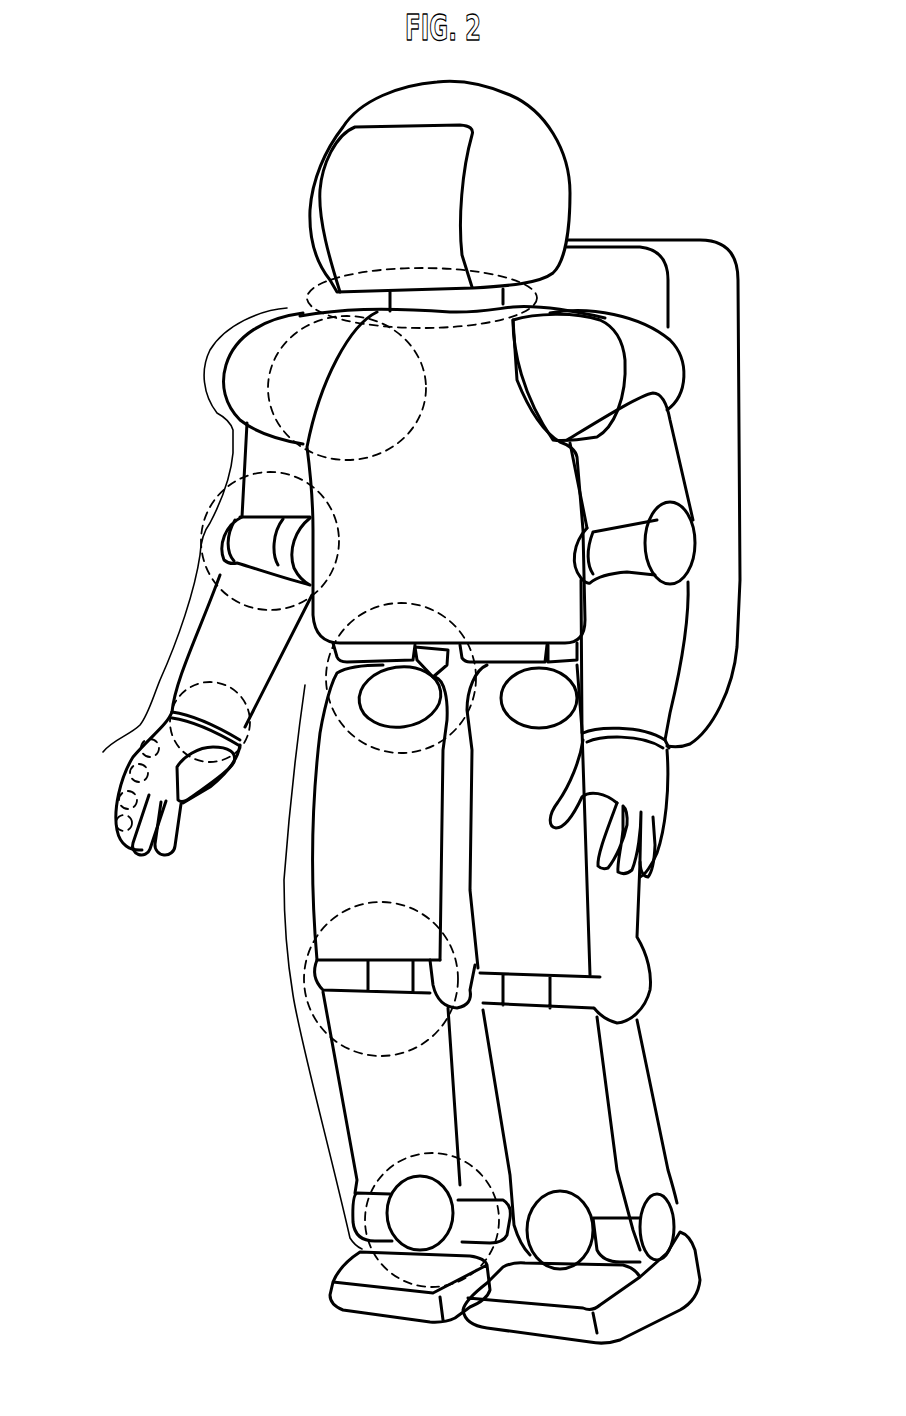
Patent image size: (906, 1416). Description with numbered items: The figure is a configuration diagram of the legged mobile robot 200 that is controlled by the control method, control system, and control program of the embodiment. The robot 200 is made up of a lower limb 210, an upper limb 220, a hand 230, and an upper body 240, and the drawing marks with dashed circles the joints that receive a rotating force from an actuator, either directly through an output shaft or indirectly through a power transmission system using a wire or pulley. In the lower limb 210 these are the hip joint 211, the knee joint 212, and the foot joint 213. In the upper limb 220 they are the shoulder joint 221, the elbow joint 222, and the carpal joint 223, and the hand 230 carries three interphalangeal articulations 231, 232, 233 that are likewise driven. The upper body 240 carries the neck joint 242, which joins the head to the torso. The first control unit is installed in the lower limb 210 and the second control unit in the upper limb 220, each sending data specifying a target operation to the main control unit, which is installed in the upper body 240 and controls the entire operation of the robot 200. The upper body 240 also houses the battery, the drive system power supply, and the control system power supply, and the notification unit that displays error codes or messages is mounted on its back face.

The legged mobile robot 200 is at (653, 133).
The lower limb 210 is at (298, 947).
The hip joint 211 is at (357, 742).
The knee joint 212 is at (374, 903).
The foot joint 213 is at (410, 1157).
The upper limb 220 is at (205, 535).
The shoulder joint 221 is at (413, 422).
The elbow joint 222 is at (335, 520).
The carpal joint 223 is at (243, 697).
The hand 230 is at (106, 849).
The interphalangeal articulation 231 is at (182, 778).
The interphalangeal articulation 232 is at (173, 802).
The interphalangeal articulation 233 is at (157, 850).
The upper body 240 is at (478, 496).
The neck joint 242 is at (320, 273).